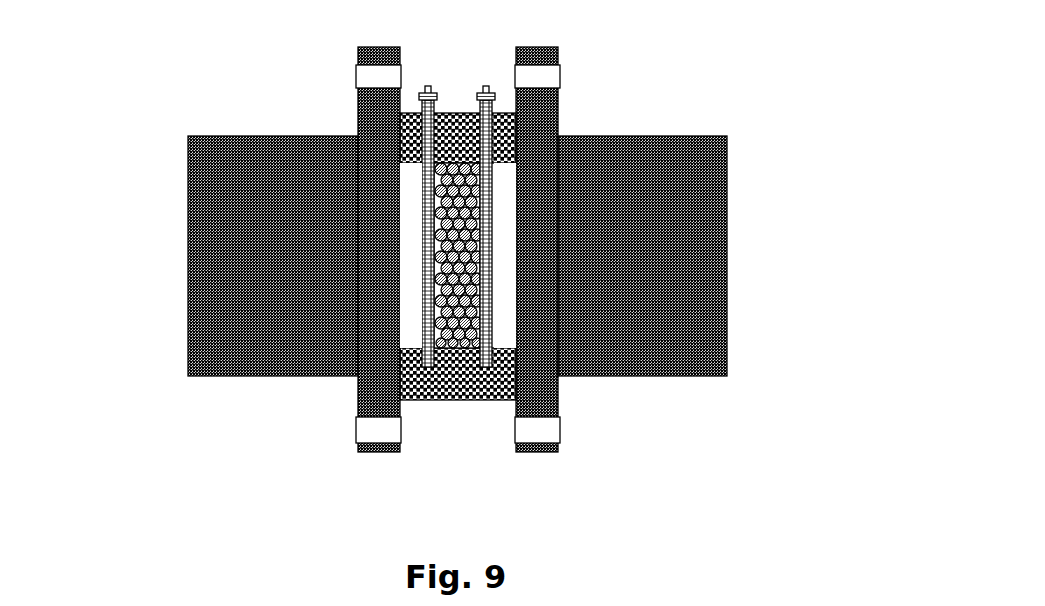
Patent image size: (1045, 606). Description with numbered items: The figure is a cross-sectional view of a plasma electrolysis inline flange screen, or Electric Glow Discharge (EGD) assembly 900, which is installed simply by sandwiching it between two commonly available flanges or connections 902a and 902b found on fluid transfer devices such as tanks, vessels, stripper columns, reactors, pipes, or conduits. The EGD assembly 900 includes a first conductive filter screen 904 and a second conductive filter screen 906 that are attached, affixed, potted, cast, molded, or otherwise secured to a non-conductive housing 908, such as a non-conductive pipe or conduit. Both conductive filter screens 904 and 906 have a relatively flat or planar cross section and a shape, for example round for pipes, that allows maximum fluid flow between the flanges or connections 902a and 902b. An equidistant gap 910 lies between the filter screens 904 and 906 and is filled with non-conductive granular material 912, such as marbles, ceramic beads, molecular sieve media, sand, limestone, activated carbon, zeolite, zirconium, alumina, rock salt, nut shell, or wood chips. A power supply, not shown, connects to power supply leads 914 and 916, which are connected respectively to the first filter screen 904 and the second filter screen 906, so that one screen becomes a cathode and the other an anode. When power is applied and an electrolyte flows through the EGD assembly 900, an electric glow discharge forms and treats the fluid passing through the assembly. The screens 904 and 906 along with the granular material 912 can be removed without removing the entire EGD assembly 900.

The Electric Glow Discharge (EGD) assembly 900 is at (479, 453).
The flange or connection 902a is at (365, 58).
The flange or connection 902b is at (546, 57).
The first conductive filter screen 904 is at (427, 130).
The second conductive filter screen 906 is at (487, 130).
The non-conductive housing 908 is at (437, 385).
The equidistant gap 910 is at (396, 218).
The non-conductive granular material 912 is at (458, 298).
The power supply lead 914 is at (428, 88).
The power supply lead 916 is at (487, 88).